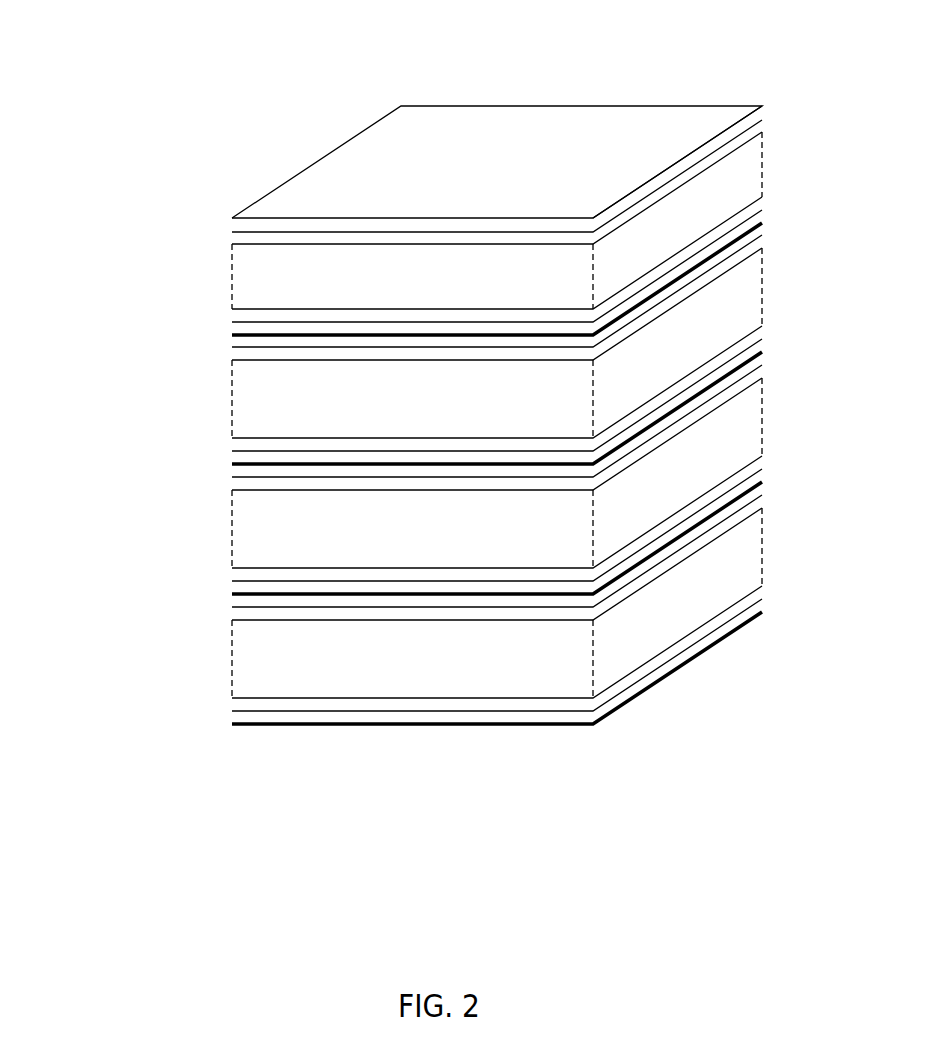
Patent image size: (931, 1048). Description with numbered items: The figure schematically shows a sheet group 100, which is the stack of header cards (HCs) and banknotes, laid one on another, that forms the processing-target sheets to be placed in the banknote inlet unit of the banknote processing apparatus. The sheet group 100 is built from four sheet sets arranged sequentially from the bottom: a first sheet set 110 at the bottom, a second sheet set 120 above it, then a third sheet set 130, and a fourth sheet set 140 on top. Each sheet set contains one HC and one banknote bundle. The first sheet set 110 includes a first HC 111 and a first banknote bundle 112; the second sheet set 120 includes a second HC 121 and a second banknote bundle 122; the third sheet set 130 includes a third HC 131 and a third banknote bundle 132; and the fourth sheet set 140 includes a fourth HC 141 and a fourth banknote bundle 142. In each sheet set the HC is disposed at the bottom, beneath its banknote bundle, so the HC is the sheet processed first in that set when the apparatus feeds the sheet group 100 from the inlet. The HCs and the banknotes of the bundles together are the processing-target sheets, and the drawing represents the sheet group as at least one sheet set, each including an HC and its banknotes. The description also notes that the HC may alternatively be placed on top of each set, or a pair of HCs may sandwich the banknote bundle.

The sheet group 100 is at (436, 366).
The fourth sheet set 140 is at (436, 221).
The fourth banknote bundle 142 is at (227, 328).
The fourth HC 141 is at (164, 218).
The third sheet set 130 is at (436, 350).
The third banknote bundle 132 is at (227, 349).
The third HC 131 is at (164, 347).
The second sheet set 120 is at (436, 480).
The second banknote bundle 122 is at (227, 479).
The second HC 121 is at (164, 477).
The first sheet set 110 is at (436, 610).
The first banknote bundle 112 is at (227, 609).
The first HC 111 is at (164, 607).